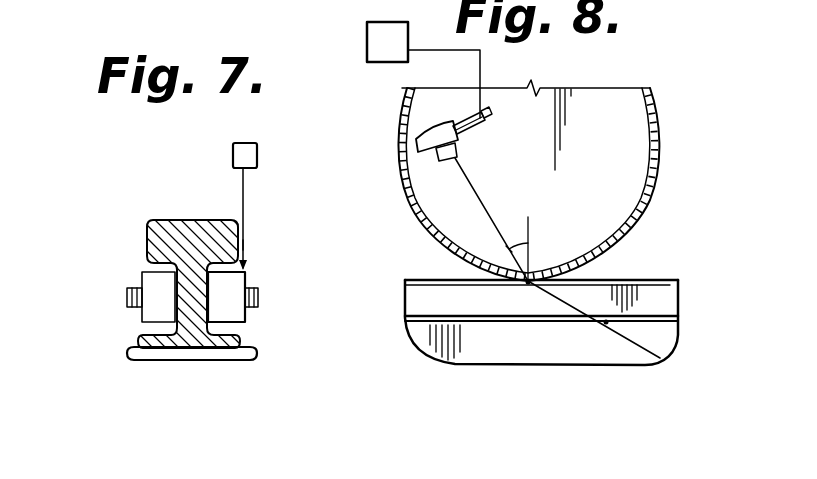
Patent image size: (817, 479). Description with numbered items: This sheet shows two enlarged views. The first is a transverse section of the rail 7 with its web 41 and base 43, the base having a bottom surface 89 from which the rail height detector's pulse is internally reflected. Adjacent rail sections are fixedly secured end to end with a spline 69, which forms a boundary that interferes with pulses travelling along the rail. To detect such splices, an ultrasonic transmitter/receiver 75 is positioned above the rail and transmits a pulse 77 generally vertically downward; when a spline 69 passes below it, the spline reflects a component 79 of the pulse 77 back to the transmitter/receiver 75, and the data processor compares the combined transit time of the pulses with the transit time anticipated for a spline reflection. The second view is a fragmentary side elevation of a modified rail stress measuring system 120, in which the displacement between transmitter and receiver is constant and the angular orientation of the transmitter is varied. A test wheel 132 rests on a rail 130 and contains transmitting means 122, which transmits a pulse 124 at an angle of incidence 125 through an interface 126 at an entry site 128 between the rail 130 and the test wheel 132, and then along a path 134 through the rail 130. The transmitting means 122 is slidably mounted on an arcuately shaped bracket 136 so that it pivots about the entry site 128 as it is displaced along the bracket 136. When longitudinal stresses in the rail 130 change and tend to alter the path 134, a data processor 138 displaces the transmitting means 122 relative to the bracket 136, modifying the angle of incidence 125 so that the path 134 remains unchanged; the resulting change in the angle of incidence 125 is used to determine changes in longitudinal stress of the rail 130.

In FIG. 7, the rail 7 is at (176, 225).
In FIG. 7, the web 41 is at (178, 288).
In FIG. 7, the base 43 is at (150, 338).
In FIG. 7, the spline 69 is at (234, 315).
In FIG. 7, the ultrasonic transmitter/receiver 75 is at (288, 139).
In FIG. 7, the pulse 77 is at (243, 184).
In FIG. 7, the component 79 is at (245, 246).
In FIG. 7, the bottom surface 89 is at (130, 357).
In FIG. 8, the modified rail stress measuring system 120 is at (585, 180).
In FIG. 8, the transmitting means 122 is at (454, 143).
In FIG. 8, the pulse 124 is at (500, 235).
In FIG. 8, the angle of incidence 125 is at (514, 226).
In FIG. 8, the interface 126 is at (543, 271).
In FIG. 8, the entry site 128 is at (523, 287).
In FIG. 8, the rail 130 is at (570, 322).
In FIG. 8, the test wheel 132 is at (653, 199).
In FIG. 8, the path 134 is at (607, 324).
In FIG. 8, the arcuately shaped bracket 136 is at (448, 127).
In FIG. 8, the data processor 138 is at (391, 57).